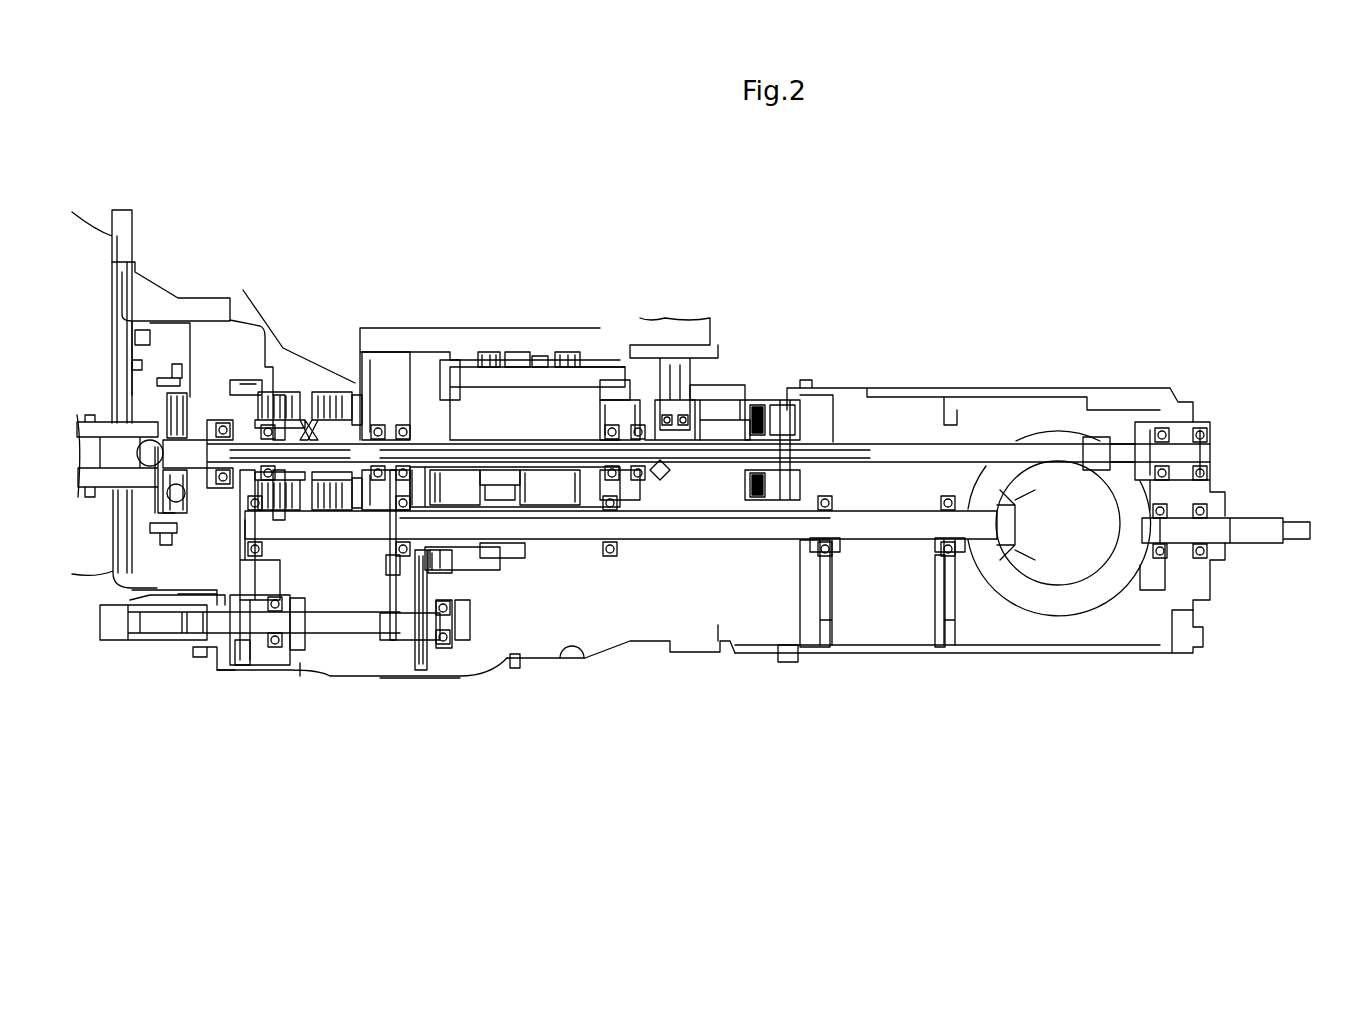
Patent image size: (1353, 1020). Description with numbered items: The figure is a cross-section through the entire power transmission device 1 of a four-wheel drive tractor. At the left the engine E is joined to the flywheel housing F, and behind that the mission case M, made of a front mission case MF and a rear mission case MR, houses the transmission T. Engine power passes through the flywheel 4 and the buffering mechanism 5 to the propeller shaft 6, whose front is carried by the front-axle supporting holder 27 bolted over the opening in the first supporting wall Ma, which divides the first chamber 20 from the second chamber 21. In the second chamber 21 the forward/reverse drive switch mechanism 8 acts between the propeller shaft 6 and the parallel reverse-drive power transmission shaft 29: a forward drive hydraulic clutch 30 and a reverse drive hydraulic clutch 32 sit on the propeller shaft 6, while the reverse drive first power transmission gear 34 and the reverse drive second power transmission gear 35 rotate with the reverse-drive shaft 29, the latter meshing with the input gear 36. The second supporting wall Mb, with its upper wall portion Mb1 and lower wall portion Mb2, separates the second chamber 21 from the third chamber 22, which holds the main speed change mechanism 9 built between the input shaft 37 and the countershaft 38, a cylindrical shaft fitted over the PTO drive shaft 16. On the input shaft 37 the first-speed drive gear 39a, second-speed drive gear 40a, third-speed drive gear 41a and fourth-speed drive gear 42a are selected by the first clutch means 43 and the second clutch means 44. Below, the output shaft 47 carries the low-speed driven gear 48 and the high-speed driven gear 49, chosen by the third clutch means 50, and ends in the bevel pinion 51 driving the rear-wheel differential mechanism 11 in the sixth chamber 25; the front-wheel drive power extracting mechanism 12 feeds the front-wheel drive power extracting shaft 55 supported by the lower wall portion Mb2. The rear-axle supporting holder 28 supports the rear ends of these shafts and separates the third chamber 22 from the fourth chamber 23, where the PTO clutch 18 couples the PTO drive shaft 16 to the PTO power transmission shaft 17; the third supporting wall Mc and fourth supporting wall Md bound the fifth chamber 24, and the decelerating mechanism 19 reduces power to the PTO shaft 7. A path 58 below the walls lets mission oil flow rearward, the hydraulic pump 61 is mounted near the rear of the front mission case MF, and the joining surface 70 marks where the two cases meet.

The power transmission device 1 is at (500, 241).
The flywheel 4 is at (178, 333).
The buffering mechanism 5 is at (190, 405).
The propeller shaft 6 is at (203, 473).
The PTO shaft 7 is at (1262, 540).
The forward/reverse drive switch mechanism 8 is at (294, 358).
The main speed change mechanism 9 is at (428, 352).
The rear-wheel differential mechanism 11 is at (997, 628).
The front-wheel drive power extracting mechanism 12 is at (395, 655).
The PTO drive shaft 16 is at (720, 470).
The PTO power transmission shaft 17 is at (905, 440).
The PTO clutch 18 is at (769, 392).
The decelerating mechanism 19 is at (1162, 601).
The first chamber 20 is at (230, 615).
The second chamber 21 is at (340, 655).
The third chamber 22 is at (480, 645).
The fourth chamber 23 is at (812, 625).
The fifth chamber 24 is at (935, 640).
The sixth chamber 25 is at (1030, 615).
The front-axle supporting holder 27 is at (240, 552).
The rear-axle supporting holder 28 is at (670, 505).
The reverse-drive power transmission shaft 29 is at (335, 532).
The forward drive hydraulic clutch 30 is at (338, 392).
The reverse drive hydraulic clutch 32 is at (288, 330).
The reverse drive first power transmission gear 34 is at (270, 560).
The reverse drive second power transmission gear 35 is at (398, 558).
The input gear 36 is at (358, 395).
The input shaft 37 is at (396, 400).
The countershaft 38 is at (300, 395).
The first-speed drive gear 39a is at (605, 367).
The second-speed drive gear 40a is at (540, 356).
The third-speed drive gear 41a is at (518, 352).
The fourth-speed drive gear 42a is at (462, 367).
The first clutch means 43 is at (577, 348).
The second clutch means 44 is at (494, 340).
The output shaft 47 is at (615, 525).
The low-speed driven gear 48 is at (455, 555).
The high-speed driven gear 49 is at (520, 550).
The third clutch means 50 is at (495, 560).
The bevel pinion 51 is at (873, 508).
The front-wheel drive power extracting shaft 55 is at (305, 630).
The path 58 is at (435, 652).
The hydraulic pump 61 is at (690, 312).
The joining surface 70 is at (725, 400).
The engine E is at (118, 232).
The flywheel housing F is at (156, 300).
The transmission T is at (602, 660).
The mission case M is at (778, 710).
The front mission case MF is at (685, 652).
The rear mission case MR is at (745, 652).
The first supporting wall Ma is at (260, 605).
The second supporting wall Mb is at (463, 670).
The upper wall portion Mb1 is at (445, 555).
The lower wall portion Mb2 is at (478, 660).
The third supporting wall Mc is at (830, 555).
The fourth supporting wall Md is at (945, 560).